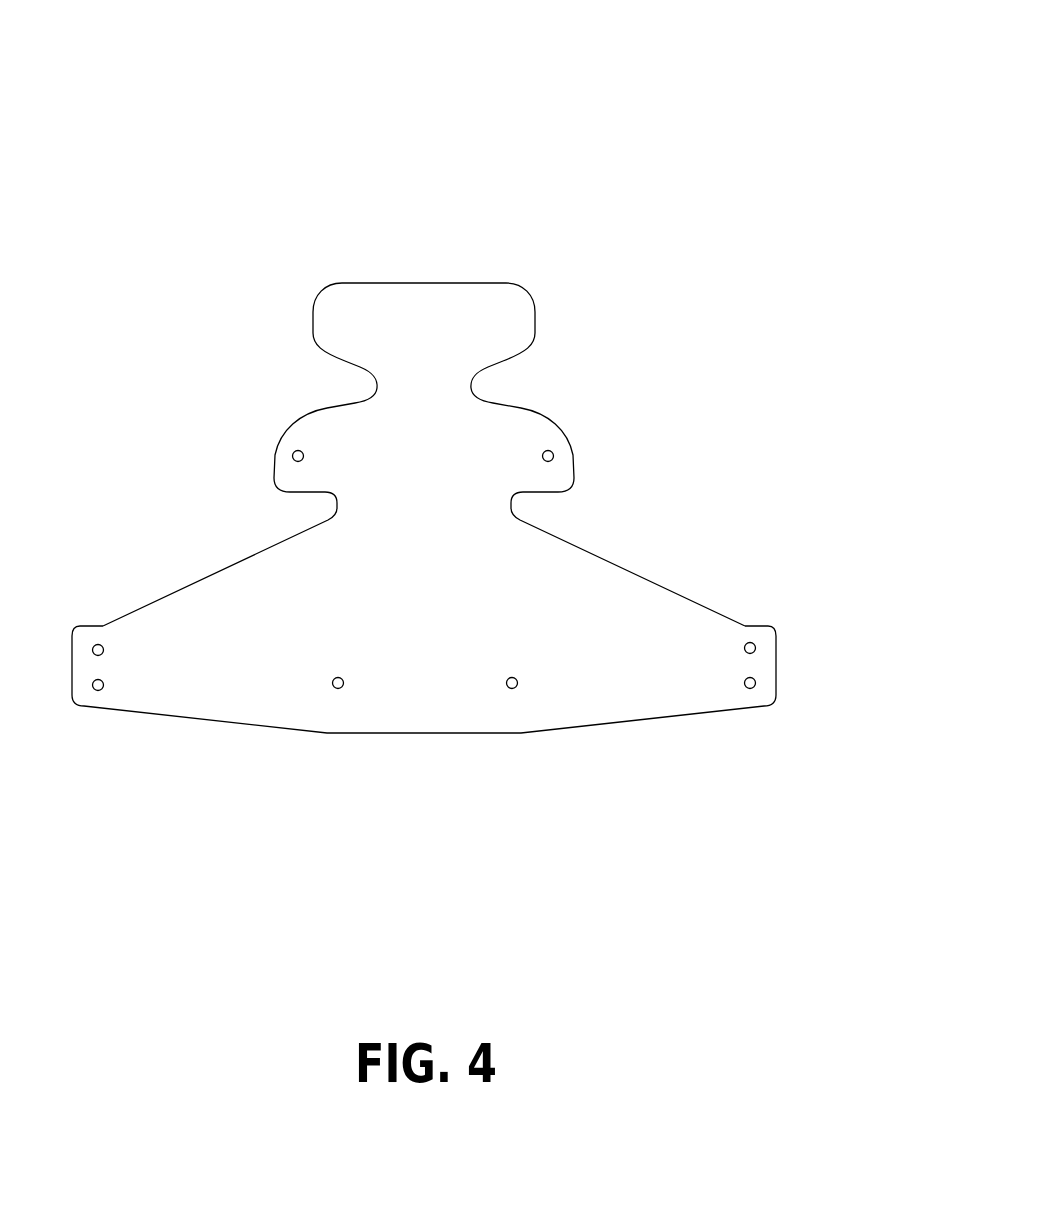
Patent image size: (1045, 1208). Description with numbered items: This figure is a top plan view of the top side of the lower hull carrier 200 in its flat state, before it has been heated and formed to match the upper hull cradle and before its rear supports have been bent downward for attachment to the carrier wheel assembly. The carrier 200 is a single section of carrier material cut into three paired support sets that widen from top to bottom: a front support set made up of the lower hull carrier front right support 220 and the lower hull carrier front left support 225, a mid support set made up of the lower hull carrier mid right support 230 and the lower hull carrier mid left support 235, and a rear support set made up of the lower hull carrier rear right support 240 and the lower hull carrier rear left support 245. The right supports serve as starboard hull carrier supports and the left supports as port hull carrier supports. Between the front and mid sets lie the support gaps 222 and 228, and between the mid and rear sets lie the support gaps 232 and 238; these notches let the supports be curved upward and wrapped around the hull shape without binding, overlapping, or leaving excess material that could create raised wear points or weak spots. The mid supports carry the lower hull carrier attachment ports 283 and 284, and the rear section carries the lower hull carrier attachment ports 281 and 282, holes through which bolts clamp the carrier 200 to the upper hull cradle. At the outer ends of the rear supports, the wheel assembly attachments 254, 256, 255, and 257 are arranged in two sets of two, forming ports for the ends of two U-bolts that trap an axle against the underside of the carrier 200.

The lower hull carrier 200 is at (427, 399).
The lower hull carrier front right support 220 is at (535, 322).
The lower hull carrier front left support 225 is at (313, 322).
The support gap 222 is at (570, 367).
The support gap 228 is at (318, 367).
The lower hull carrier mid right support 230 is at (577, 464).
The lower hull carrier mid left support 235 is at (273, 464).
The support gap 232 is at (612, 514).
The support gap 238 is at (278, 512).
The lower hull carrier rear right support 240 is at (672, 716).
The lower hull carrier rear left support 245 is at (177, 718).
The wheel assembly attachment 254 is at (745, 679).
The wheel assembly attachment 256 is at (745, 643).
The wheel assembly attachment 255 is at (103, 681).
The wheel assembly attachment 257 is at (103, 645).
The lower hull carrier attachment port 281 is at (512, 677).
The lower hull carrier attachment port 282 is at (338, 677).
The lower hull carrier attachment port 283 is at (544, 451).
The lower hull carrier attachment port 284 is at (300, 450).